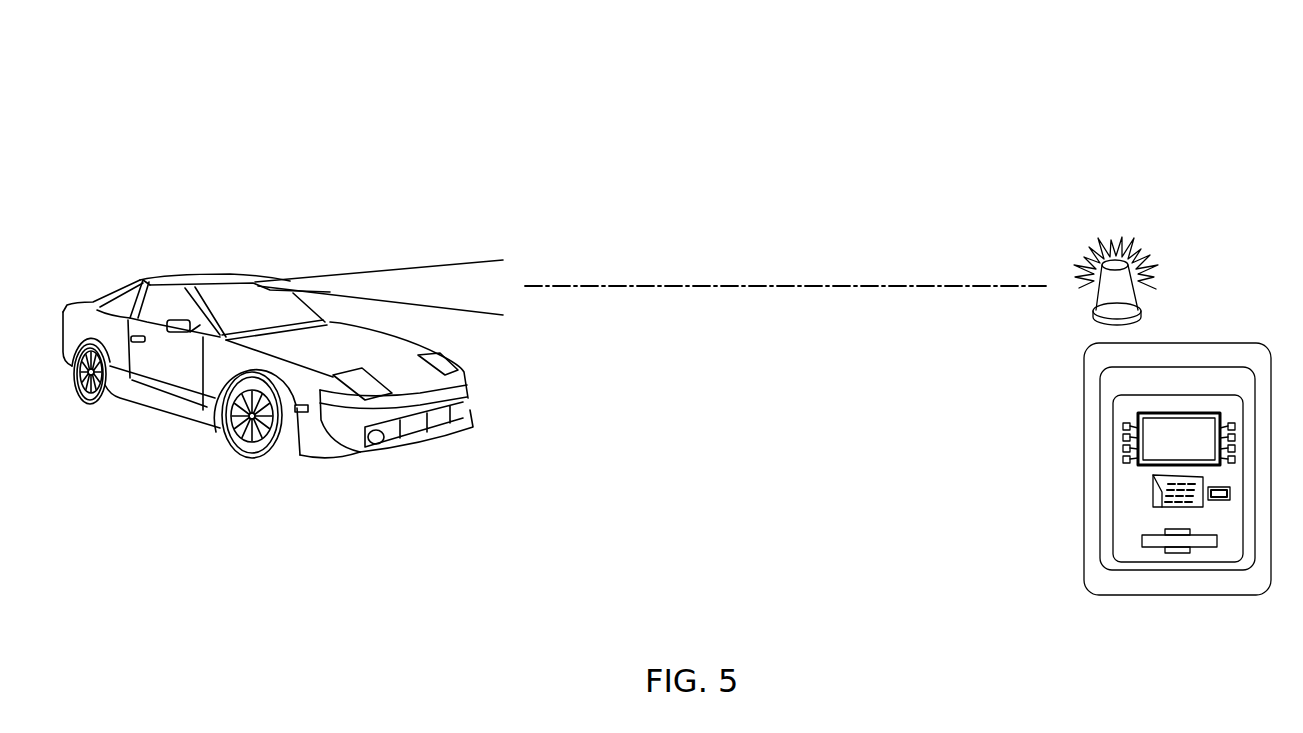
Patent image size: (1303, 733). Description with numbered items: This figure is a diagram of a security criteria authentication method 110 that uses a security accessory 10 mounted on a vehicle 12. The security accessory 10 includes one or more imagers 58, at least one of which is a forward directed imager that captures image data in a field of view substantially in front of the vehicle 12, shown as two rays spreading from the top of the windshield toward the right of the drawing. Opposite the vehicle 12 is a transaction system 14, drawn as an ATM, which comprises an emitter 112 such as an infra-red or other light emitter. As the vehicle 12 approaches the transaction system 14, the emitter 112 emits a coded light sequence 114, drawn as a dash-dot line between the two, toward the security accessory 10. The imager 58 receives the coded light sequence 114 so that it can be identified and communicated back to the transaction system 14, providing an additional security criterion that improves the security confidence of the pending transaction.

The security accessory 10 is at (223, 273).
The vehicle 12 is at (150, 278).
The imager 58 is at (257, 276).
The security criteria authentication method 110 is at (924, 60).
The emitter 112 is at (1128, 286).
The coded light sequence 114 is at (798, 332).
The transaction system 14 is at (1092, 481).